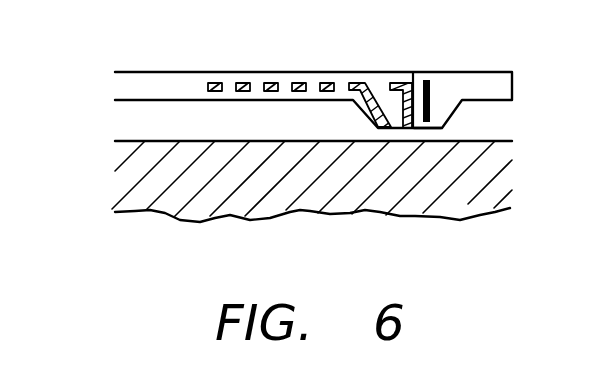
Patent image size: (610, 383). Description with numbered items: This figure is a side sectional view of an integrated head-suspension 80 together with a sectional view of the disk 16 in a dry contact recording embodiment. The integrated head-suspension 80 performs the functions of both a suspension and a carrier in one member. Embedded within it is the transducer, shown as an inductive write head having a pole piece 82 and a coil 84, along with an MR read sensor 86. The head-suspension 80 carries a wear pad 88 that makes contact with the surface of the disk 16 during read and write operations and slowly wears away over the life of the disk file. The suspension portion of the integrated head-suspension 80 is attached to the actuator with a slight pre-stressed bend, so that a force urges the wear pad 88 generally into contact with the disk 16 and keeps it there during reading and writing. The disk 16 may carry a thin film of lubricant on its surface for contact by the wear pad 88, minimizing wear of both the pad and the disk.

The disk 16 is at (503, 178).
The integrated head-suspension 80 is at (498, 80).
The pole piece 82 is at (398, 130).
The coil 84 is at (243, 84).
The MR read sensor 86 is at (431, 87).
The wear pad 88 is at (430, 130).